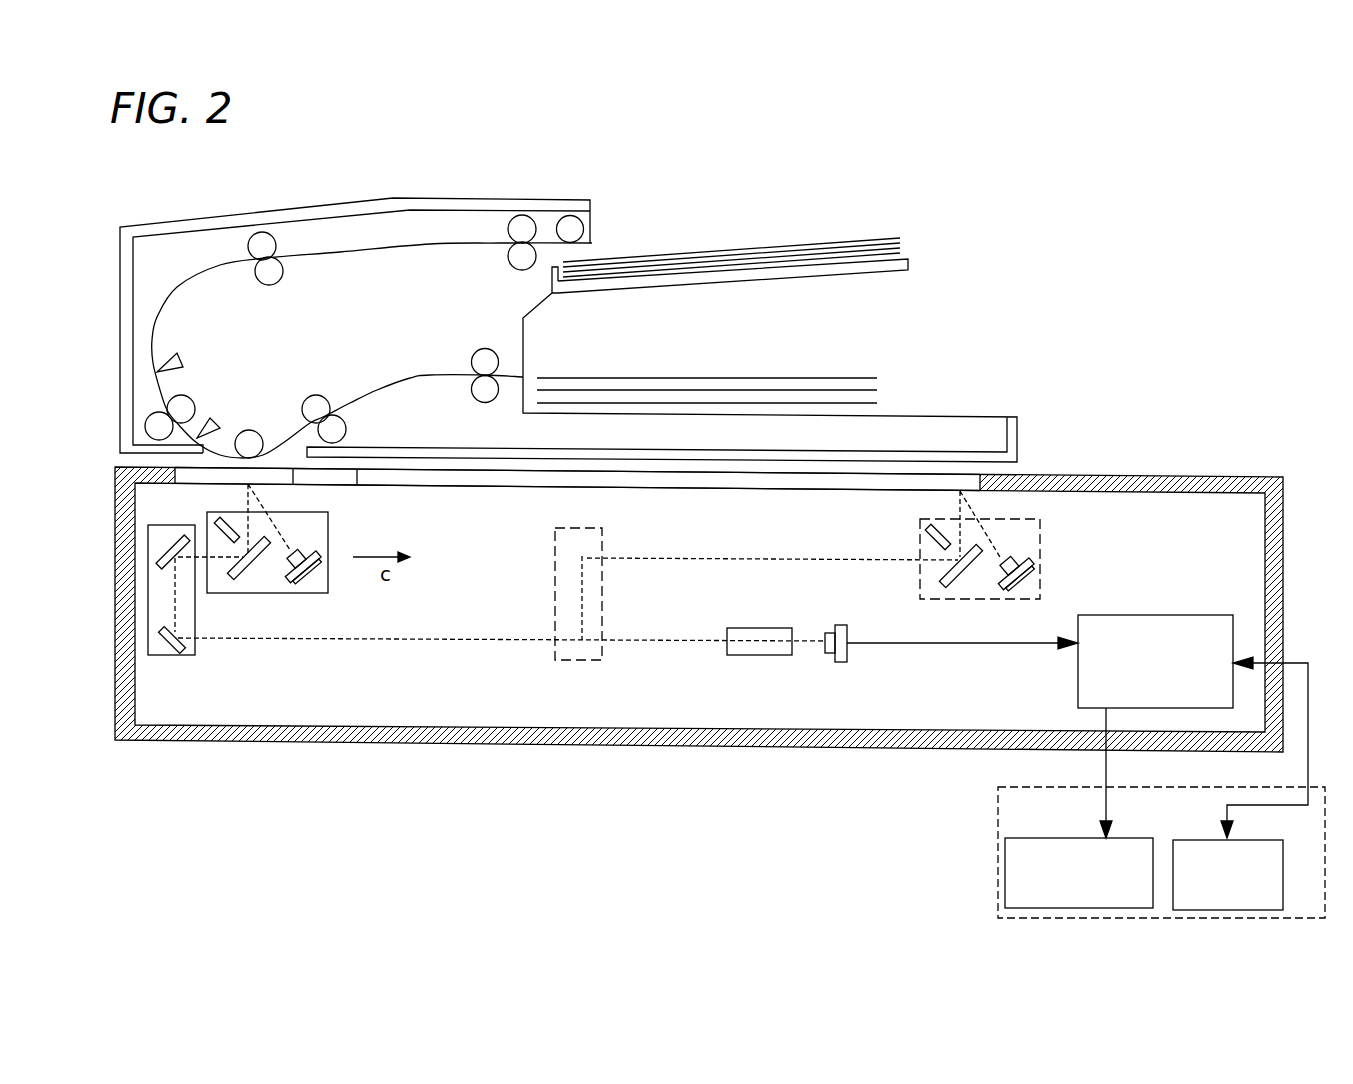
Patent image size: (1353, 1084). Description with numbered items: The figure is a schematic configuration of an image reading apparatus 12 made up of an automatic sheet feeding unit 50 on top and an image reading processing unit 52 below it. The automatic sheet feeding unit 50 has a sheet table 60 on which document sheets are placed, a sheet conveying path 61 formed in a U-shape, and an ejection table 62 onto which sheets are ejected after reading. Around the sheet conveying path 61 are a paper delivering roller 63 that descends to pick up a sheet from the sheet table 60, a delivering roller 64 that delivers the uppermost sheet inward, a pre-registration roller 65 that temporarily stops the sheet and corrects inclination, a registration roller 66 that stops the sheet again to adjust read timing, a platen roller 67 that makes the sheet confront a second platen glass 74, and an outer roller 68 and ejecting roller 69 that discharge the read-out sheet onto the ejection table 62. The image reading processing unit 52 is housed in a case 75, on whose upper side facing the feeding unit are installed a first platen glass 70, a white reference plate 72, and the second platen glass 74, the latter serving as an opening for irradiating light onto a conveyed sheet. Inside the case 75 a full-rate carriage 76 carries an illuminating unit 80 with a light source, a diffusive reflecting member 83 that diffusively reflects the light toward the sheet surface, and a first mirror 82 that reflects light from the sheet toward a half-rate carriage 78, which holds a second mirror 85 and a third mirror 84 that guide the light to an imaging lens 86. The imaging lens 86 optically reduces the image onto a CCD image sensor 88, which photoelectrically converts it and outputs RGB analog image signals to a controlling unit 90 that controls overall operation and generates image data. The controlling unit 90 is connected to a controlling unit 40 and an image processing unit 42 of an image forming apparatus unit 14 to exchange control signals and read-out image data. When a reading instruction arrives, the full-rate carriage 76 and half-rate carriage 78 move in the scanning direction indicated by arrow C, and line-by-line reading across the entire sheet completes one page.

The image reading apparatus 12 is at (1004, 185).
The image forming apparatus unit 14 is at (998, 850).
The controlling unit 40 is at (1258, 838).
The image processing unit 42 is at (1123, 837).
The automatic sheet feeding unit 50 is at (965, 278).
The image reading processing unit 52 is at (1210, 407).
The sheet table 60 is at (802, 279).
The sheet conveying path 61 is at (407, 248).
The ejection table 62 is at (950, 416).
The paper delivering roller 63 is at (594, 225).
The delivering roller 64 is at (522, 215).
The pre-registration roller 65 is at (264, 231).
The registration roller 66 is at (190, 396).
The platen roller 67 is at (255, 430).
The outer roller 68 is at (320, 395).
The ejecting roller 69 is at (487, 348).
The first platen glass 70 is at (517, 485).
The white reference plate 72 is at (342, 484).
The second platen glass 74 is at (282, 485).
The case 75 is at (1113, 471).
The full-rate carriage 76 is at (328, 581).
The half-rate carriage 78 is at (152, 656).
The illuminating unit 80 is at (305, 579).
The first mirror 82 is at (245, 574).
The diffusive reflecting member 83 is at (222, 520).
The third mirror 84 is at (185, 650).
The second mirror 85 is at (175, 528).
The imaging lens 86 is at (770, 628).
The CCD image sensor 88 is at (842, 625).
The controlling unit 90 is at (1197, 615).